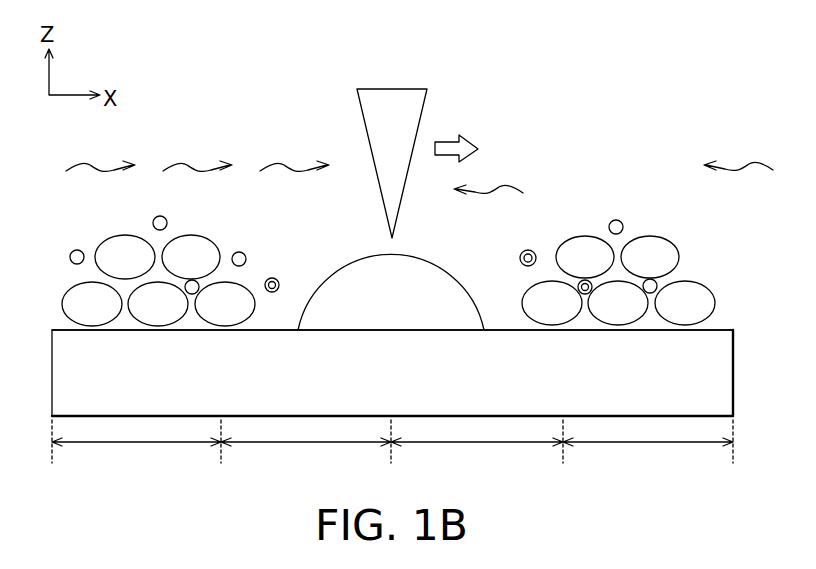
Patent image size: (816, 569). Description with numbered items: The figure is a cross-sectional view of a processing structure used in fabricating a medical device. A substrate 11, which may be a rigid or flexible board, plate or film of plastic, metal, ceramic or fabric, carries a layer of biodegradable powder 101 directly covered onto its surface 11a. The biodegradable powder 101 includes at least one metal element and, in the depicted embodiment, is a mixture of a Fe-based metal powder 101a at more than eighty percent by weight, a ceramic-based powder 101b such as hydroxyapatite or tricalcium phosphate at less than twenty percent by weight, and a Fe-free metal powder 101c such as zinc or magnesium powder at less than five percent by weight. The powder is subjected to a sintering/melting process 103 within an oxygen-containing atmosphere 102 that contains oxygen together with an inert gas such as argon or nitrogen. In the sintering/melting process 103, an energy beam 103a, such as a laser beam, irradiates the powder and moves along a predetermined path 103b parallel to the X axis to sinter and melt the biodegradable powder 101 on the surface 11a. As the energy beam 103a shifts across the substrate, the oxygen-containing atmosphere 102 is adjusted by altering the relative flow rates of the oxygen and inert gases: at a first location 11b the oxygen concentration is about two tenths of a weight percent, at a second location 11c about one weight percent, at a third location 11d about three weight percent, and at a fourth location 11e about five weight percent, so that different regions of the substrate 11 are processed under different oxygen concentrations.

The substrate 11 is at (417, 349).
The surface of the substrate 11a is at (728, 318).
The first location of the substrate surface 11b is at (136, 454).
The second location of the substrate surface 11c is at (306, 454).
The third location of the substrate surface 11d is at (477, 454).
The fourth location of the substrate surface 11e is at (648, 454).
The biodegradable powder 101 is at (617, 230).
The Fe-based metal powder 101a is at (652, 235).
The ceramic-based powder 101b is at (615, 219).
The Fe-free metal powder 101c is at (555, 218).
The oxygen-containing atmosphere 102 is at (93, 164).
The sintering/melting process 103 is at (450, 130).
The energy beam 103a is at (428, 98).
The predetermined path 103b is at (477, 142).